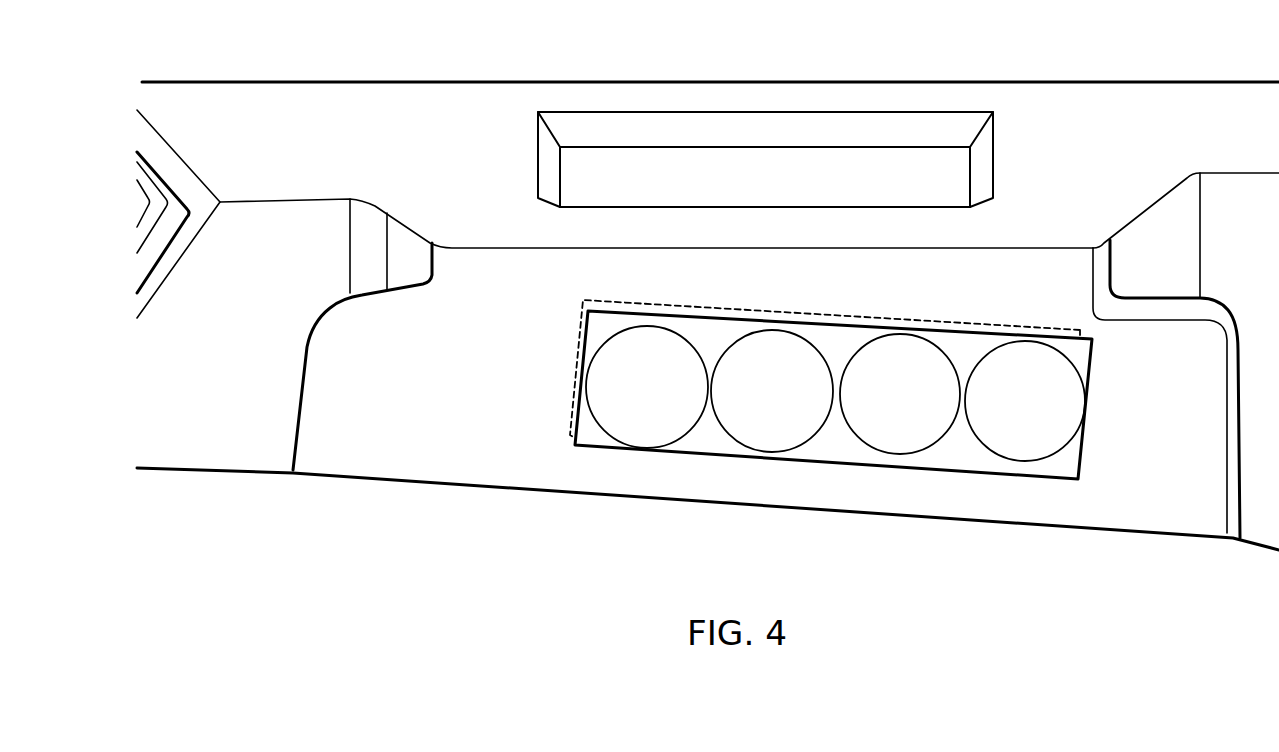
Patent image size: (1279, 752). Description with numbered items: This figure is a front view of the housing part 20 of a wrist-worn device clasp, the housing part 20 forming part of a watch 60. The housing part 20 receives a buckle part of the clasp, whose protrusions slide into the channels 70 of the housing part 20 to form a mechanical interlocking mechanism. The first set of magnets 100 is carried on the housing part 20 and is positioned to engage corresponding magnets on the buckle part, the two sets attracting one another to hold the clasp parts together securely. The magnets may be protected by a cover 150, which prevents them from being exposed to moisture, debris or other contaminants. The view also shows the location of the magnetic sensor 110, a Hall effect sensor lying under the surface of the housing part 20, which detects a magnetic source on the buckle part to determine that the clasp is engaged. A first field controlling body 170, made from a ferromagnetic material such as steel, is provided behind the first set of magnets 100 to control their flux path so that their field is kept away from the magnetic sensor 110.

The housing part 20 is at (333, 322).
The watch 60 is at (632, 81).
The channels 70 is at (324, 290).
The first set of magnets 100 is at (1010, 372).
The magnetic sensor 110 is at (470, 355).
The cover 150 is at (1012, 333).
The first field controlling body 170 is at (997, 322).